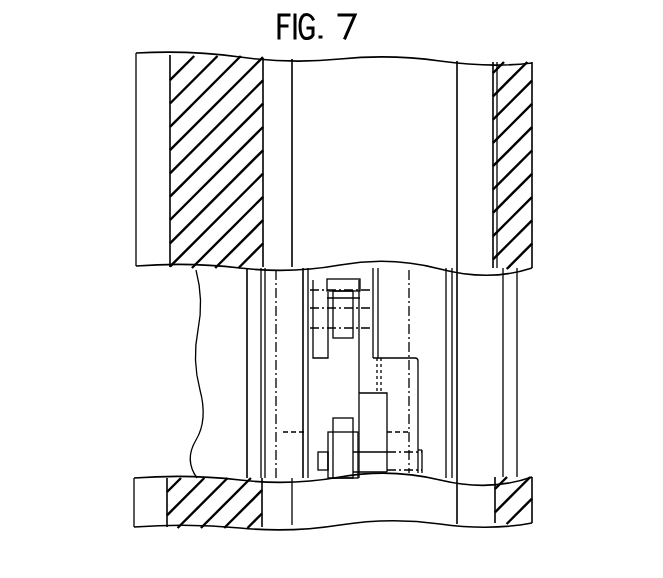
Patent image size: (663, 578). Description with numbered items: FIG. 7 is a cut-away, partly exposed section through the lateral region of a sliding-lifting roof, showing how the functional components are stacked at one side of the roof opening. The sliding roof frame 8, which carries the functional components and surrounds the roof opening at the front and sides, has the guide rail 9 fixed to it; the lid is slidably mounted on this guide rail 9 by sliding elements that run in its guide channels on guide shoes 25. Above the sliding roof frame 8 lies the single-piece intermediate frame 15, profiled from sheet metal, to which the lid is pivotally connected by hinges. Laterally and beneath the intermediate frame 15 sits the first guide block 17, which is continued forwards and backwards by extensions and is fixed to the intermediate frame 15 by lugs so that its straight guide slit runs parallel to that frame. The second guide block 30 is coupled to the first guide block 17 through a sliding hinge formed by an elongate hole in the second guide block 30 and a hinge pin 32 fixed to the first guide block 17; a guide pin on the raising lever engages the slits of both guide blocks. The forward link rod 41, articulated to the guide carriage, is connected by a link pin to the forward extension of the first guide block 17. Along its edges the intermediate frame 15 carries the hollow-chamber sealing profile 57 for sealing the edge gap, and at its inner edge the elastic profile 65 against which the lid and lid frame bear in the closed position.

The sliding roof frame 8 is at (200, 404).
The guide rail 9 is at (283, 373).
The intermediate frame 15 is at (385, 154).
The first guide block 17 is at (418, 437).
The guide shoes 25 is at (291, 432).
The second guide block 30 is at (343, 423).
The hinge pin 32 is at (368, 463).
The forward link rod 41 is at (345, 338).
The sealing profile 57 is at (198, 146).
The elastic profile 65 is at (523, 142).